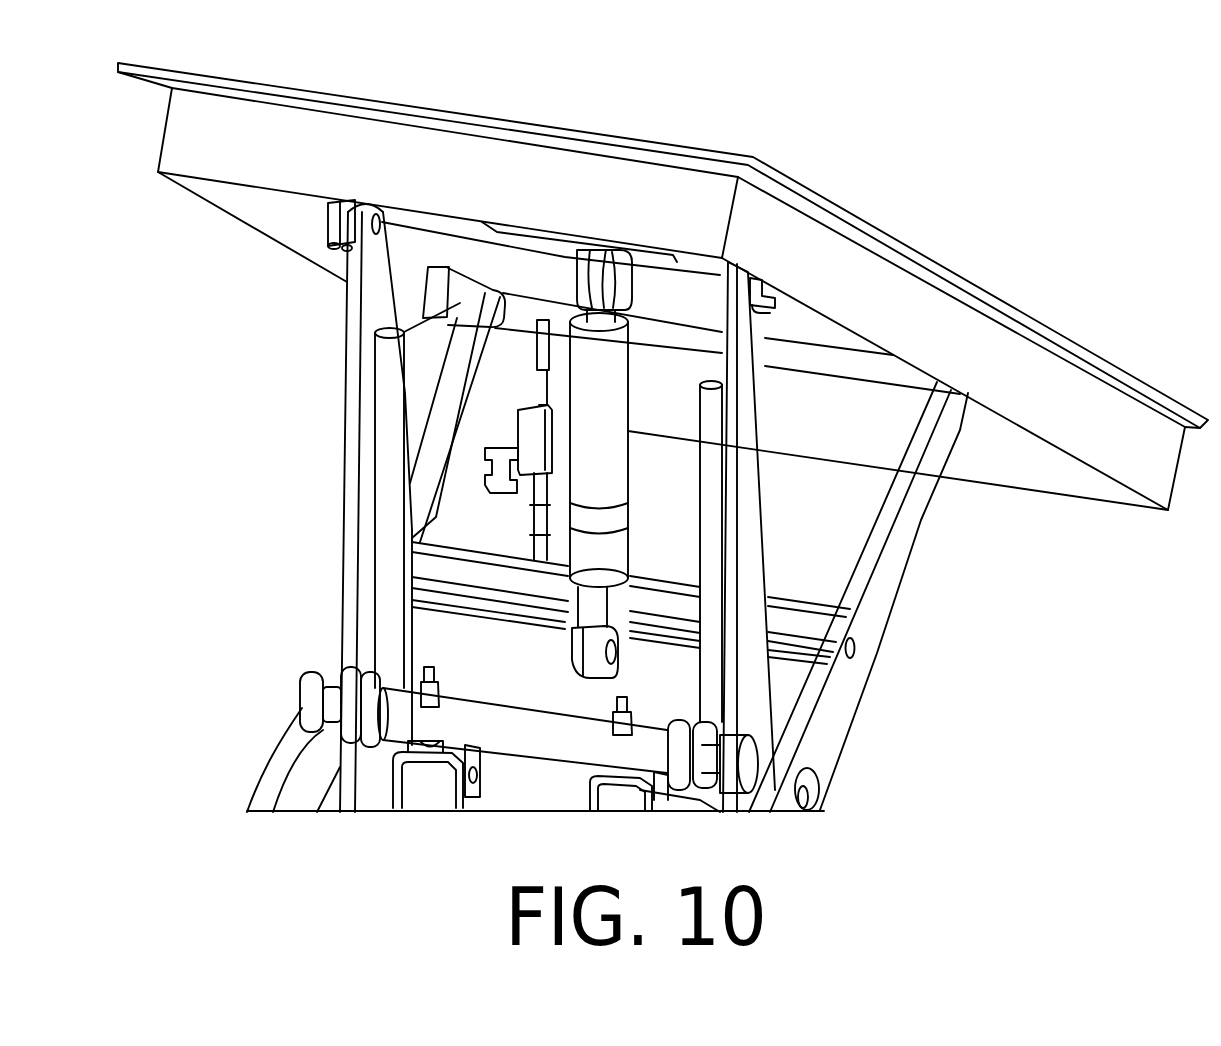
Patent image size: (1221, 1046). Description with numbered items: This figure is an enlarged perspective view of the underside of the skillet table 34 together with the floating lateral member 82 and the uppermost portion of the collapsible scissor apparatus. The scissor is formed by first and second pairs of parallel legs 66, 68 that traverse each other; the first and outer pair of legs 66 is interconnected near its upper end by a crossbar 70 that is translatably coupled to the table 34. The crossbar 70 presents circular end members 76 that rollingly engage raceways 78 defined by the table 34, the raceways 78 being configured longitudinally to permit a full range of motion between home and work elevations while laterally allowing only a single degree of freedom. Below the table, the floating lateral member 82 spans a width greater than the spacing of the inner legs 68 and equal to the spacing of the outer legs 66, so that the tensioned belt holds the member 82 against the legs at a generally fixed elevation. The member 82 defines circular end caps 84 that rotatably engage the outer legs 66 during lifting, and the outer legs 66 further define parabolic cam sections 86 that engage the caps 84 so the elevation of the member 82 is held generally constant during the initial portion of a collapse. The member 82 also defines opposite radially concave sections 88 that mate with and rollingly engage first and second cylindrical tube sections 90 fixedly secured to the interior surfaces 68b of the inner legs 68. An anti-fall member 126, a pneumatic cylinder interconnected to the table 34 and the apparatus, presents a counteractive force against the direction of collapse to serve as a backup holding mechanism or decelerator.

The table 34 is at (1005, 488).
The outer legs 66 is at (871, 665).
The inner legs 68 is at (352, 440).
The interior surfaces 68b is at (374, 500).
The crossbar 70 is at (790, 370).
The circular end members 76 is at (515, 316).
The raceways 78 is at (433, 290).
The floating lateral member 82 is at (372, 675).
The circular end caps 84 is at (745, 767).
The parabolic cam sections 86 is at (265, 782).
The radially concave sections 88 is at (337, 682).
The cylindrical tube sections 90 is at (388, 527).
The anti-fall member 126 is at (628, 433).